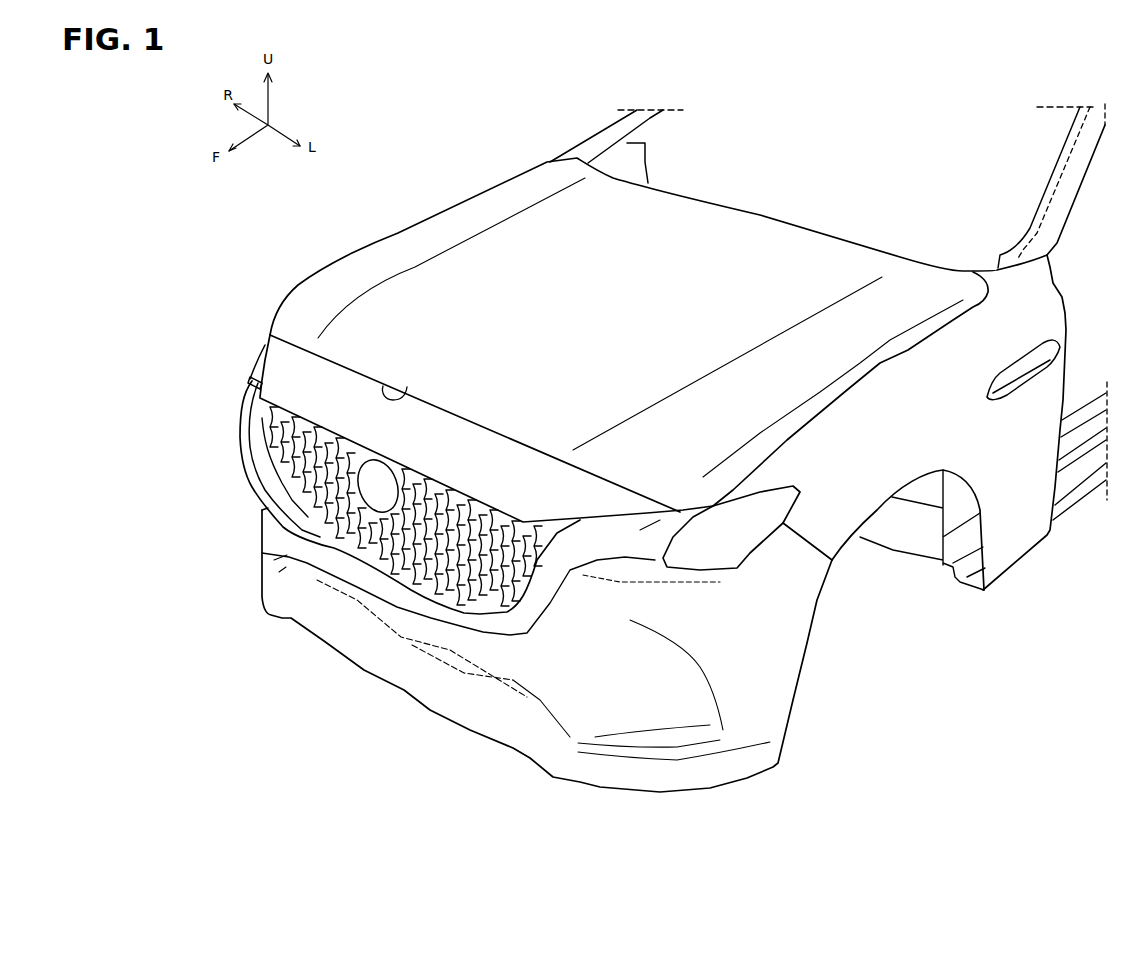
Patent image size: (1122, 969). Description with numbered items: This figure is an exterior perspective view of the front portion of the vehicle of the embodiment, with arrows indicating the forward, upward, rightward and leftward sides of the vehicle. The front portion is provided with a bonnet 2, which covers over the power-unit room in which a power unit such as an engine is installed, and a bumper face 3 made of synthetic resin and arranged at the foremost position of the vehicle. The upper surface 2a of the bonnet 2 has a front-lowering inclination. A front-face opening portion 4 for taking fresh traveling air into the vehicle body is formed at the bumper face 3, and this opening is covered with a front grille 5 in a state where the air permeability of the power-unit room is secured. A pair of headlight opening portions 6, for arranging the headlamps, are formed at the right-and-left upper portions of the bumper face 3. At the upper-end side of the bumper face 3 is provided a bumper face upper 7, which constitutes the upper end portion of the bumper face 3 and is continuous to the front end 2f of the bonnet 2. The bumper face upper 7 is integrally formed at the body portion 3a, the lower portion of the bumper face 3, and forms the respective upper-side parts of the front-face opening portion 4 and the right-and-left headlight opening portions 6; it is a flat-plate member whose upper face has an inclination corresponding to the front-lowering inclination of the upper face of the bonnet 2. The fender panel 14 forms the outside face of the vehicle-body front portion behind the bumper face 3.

The bonnet 2 is at (402, 232).
The hood upper surface 2a is at (468, 205).
The front end of the bonnet 2f is at (385, 380).
The bumper face 3 is at (238, 430).
The body portion of the bumper face 3a is at (271, 555).
The front-face opening portion 4 is at (280, 463).
The front grille 5 is at (293, 500).
The headlight opening portion 6 is at (252, 382).
The bumper face upper 7 is at (285, 355).
The fender panel 14 is at (1023, 538).